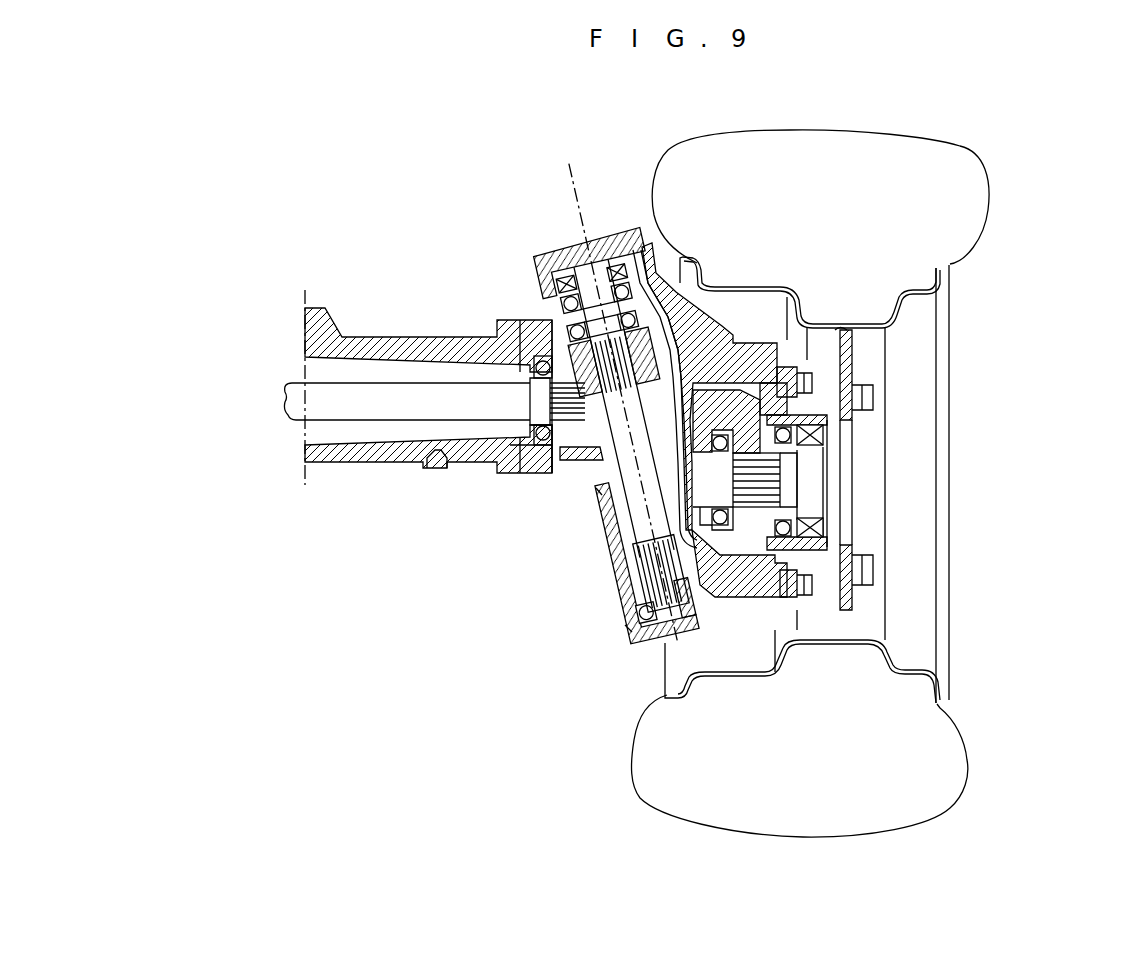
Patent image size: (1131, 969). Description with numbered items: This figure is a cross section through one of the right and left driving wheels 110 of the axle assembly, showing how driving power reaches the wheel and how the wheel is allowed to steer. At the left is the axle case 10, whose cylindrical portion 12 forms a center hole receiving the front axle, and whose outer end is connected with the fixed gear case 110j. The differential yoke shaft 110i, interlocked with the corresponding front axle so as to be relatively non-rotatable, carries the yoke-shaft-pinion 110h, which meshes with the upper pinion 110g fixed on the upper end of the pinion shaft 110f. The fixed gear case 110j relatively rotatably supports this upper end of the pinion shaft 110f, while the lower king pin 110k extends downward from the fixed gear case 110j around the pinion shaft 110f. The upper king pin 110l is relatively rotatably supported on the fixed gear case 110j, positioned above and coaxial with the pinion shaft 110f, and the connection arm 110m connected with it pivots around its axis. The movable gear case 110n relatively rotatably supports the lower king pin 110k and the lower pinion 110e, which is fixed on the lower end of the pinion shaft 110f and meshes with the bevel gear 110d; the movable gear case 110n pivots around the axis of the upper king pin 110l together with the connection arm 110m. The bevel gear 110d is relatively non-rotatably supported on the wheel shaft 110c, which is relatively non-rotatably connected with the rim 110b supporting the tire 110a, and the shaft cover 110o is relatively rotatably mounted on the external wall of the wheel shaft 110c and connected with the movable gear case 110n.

The axle case 10 is at (343, 297).
The cylindrical portion 12 is at (387, 347).
The driving wheel 110 is at (600, 193).
The tire 110a is at (968, 202).
The rim 110b is at (850, 360).
The wheel shaft 110c is at (810, 492).
The bevel gear 110d is at (797, 403).
The lower pinion 110e is at (653, 643).
The pinion shaft 110f is at (625, 625).
The upper pinion 110g is at (597, 303).
The yoke-shaft-pinion 110h is at (590, 460).
The differential yoke shaft 110i is at (340, 395).
The fixed gear case 110j is at (537, 470).
The lower king pin 110k is at (596, 488).
The upper king pin 110l is at (592, 262).
The connection arm 110m is at (625, 245).
The movable gear case 110n is at (647, 556).
The shaft cover 110o is at (823, 580).